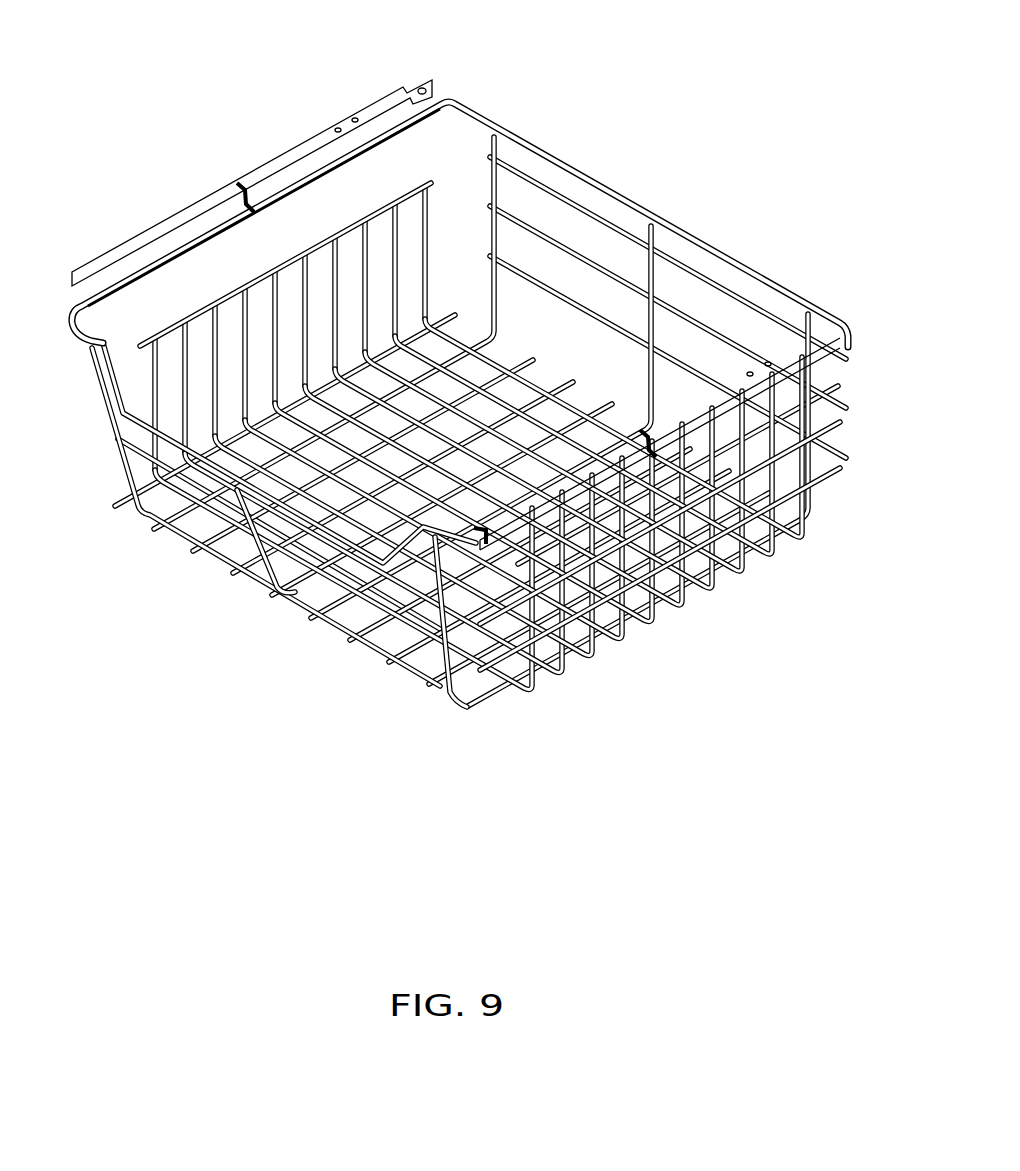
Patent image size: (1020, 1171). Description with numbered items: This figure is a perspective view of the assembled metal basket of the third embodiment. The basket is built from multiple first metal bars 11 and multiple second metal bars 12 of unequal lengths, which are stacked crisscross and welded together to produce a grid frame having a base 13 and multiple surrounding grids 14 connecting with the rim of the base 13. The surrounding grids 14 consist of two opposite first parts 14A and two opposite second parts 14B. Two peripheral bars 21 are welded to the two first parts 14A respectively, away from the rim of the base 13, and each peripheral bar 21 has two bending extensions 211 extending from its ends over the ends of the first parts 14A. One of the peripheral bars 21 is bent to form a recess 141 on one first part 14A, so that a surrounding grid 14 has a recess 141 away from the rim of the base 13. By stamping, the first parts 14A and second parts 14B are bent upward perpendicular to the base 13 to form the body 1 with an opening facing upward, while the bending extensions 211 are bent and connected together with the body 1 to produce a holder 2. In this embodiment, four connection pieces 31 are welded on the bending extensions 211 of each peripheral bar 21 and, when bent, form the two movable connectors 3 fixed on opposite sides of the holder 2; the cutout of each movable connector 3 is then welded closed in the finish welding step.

The body 1 is at (463, 427).
The holder 2 is at (440, 291).
The movable connector 3 is at (252, 143).
The first metal bar 11 is at (289, 525).
The second metal bar 12 is at (651, 596).
The base 13 is at (461, 394).
The surrounding grid 14 is at (478, 504).
The first part 14A is at (482, 376).
The second part 14B is at (519, 334).
The recess 141 is at (266, 596).
The peripheral bar 21 is at (440, 210).
The bending extension 211 is at (264, 177).
The connection piece 31 is at (402, 316).